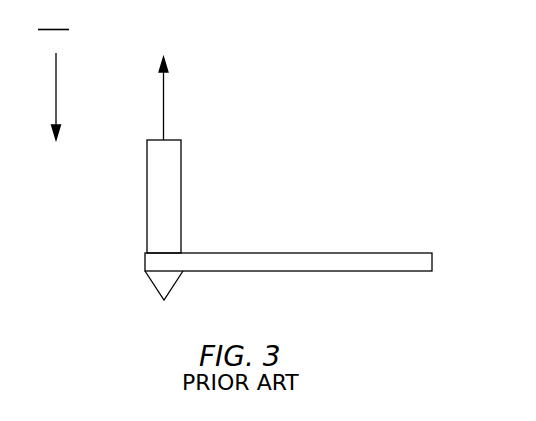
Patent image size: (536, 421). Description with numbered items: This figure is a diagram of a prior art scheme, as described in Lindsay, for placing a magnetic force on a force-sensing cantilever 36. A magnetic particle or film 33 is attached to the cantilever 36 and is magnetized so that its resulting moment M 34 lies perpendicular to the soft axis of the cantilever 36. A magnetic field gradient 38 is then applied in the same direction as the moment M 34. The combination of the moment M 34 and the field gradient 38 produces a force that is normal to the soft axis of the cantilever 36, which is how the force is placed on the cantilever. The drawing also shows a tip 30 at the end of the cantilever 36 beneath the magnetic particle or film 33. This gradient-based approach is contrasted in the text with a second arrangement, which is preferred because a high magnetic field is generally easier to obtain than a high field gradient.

The tip 30 is at (172, 285).
The magnetic particle or film 33 is at (181, 196).
The moment M 34 is at (164, 110).
The cantilever 36 is at (316, 252).
The magnetic field gradient 38 is at (57, 107).